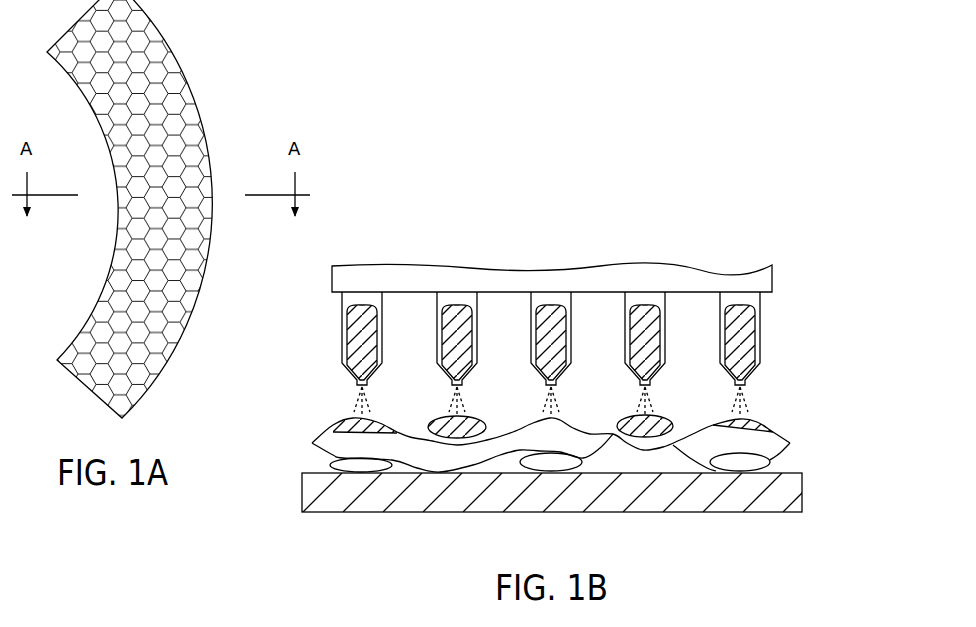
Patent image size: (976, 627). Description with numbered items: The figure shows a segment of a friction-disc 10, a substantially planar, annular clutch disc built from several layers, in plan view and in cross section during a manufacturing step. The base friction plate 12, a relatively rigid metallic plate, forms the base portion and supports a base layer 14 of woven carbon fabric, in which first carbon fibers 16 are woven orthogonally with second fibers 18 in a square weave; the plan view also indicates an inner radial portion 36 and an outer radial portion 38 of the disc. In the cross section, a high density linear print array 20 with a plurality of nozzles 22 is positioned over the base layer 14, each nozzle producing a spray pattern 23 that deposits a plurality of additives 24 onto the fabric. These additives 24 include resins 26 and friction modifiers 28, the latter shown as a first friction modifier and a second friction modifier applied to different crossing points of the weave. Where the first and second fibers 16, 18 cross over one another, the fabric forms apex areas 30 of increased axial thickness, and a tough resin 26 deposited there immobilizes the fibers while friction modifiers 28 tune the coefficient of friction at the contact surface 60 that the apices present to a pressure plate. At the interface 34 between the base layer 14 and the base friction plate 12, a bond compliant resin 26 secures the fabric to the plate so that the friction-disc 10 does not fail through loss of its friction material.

In FIG. 1A, the friction-disc 10 is at (161, 215).
In FIG. 1B, the friction-disc 10 is at (559, 308).
In FIG. 1B, the base friction plate 12 is at (746, 494).
In FIG. 1B, the base layer 14 is at (662, 470).
In FIG. 1A, the first carbon fibers 16 is at (178, 299).
In FIG. 1B, the first carbon fibers 16 is at (370, 470).
In FIG. 1A, the second fibers 18 is at (152, 215).
In FIG. 1B, the second fibers 18 is at (553, 451).
In FIG. 1B, the print array 20 is at (426, 270).
In FIG. 1B, the nozzles 22 is at (720, 305).
In FIG. 1B, the spray pattern 23 is at (559, 370).
In FIG. 1B, the additives 24 is at (804, 397).
In FIG. 1B, the resins 26 is at (752, 407).
In FIG. 1B, the friction modifiers 28 is at (352, 400).
In FIG. 1B, the apex areas 30 is at (633, 413).
In FIG. 1B, the interface 34 is at (505, 453).
In FIG. 1A, the inner radial portion 36 is at (99, 302).
In FIG. 1A, the outer radial portion 38 is at (157, 209).
In FIG. 1B, the contact surface 60 is at (505, 453).